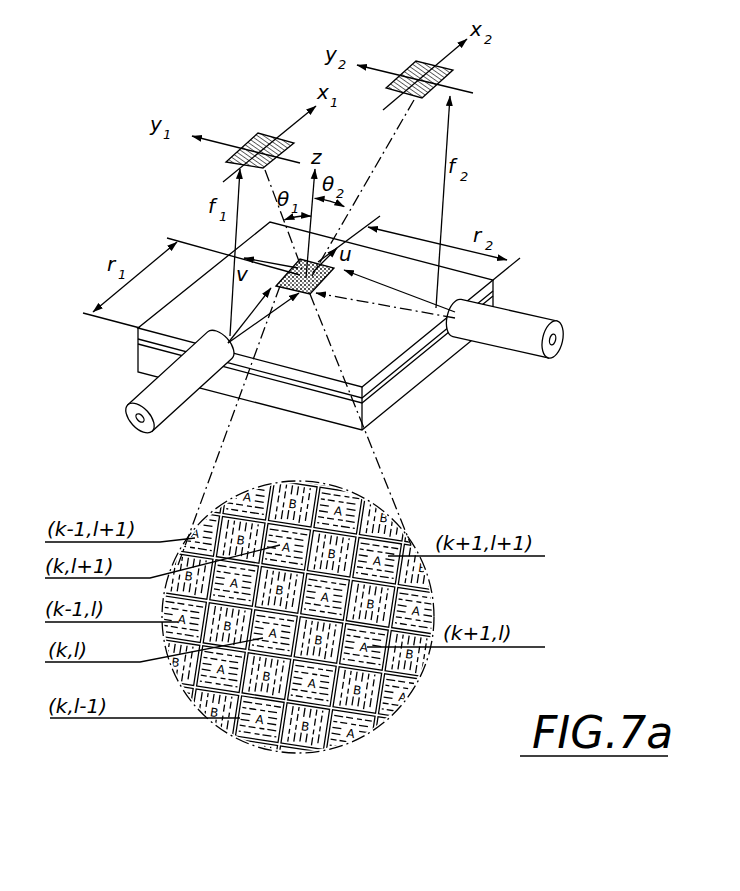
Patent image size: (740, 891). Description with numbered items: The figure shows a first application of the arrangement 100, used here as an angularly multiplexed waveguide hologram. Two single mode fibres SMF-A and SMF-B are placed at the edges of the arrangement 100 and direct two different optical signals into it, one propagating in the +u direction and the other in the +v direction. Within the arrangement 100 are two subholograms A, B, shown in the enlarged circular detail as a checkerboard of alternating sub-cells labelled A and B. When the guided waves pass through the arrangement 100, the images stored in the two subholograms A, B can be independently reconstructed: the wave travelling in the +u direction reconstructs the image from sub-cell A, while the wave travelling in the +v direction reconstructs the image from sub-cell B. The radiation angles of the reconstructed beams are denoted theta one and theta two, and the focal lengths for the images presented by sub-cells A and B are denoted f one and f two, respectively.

The arrangement 100 is at (276, 285).
The single mode fibre SMF-A is at (175, 477).
The single mode fibre SMF-B is at (635, 398).
The subhologram A is at (260, 138).
The subhologram B is at (433, 77).